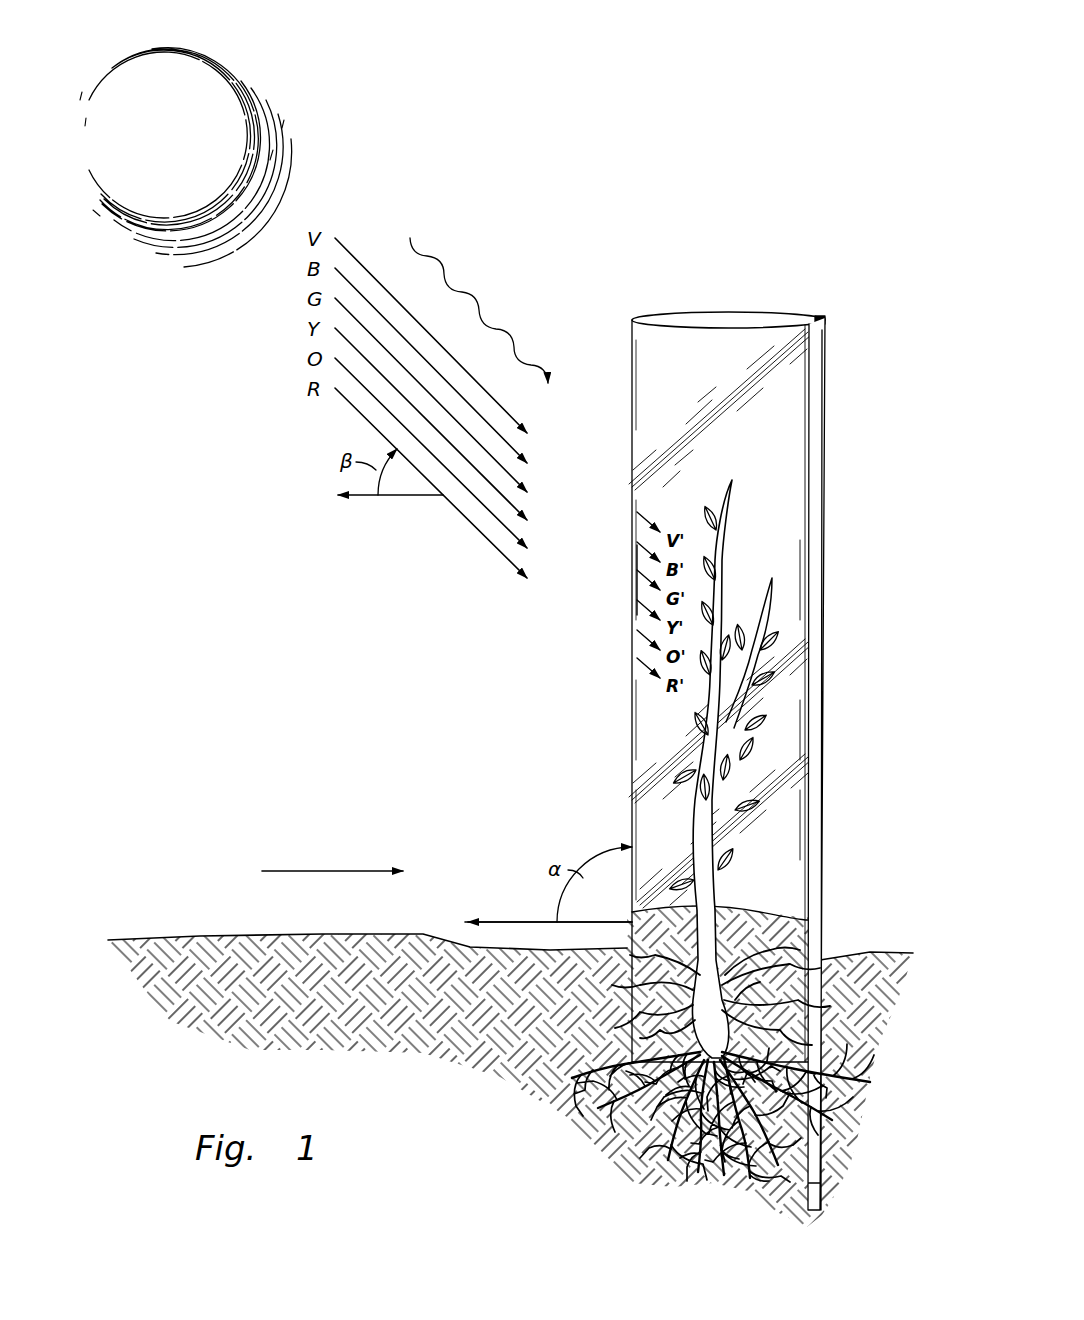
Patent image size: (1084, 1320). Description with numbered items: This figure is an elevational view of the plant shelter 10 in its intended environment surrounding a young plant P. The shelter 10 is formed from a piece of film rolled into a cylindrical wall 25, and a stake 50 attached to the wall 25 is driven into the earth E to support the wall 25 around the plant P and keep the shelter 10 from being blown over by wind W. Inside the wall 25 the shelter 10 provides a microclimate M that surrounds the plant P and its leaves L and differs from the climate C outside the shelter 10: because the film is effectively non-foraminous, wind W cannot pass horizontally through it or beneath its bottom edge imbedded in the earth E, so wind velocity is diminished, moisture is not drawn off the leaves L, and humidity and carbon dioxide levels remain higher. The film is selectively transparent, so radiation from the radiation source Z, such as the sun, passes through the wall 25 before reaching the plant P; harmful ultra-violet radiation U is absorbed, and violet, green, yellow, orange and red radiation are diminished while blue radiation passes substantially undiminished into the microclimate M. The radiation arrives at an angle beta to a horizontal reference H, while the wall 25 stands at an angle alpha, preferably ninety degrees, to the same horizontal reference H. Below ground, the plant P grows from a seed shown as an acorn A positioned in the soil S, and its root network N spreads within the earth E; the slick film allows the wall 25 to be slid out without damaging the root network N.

The plant shelter 10 is at (648, 272).
The cylindrical wall 25 is at (630, 358).
The stake 50 is at (826, 350).
The radiation source Z is at (184, 169).
The ultra-violet radiation U is at (469, 305).
The horizontal reference H is at (380, 497).
The climate C is at (191, 732).
The wind W is at (328, 870).
The earth E is at (268, 1024).
The soil S is at (786, 949).
The microclimate M is at (766, 444).
The plant P is at (698, 822).
The leaves L is at (734, 860).
The acorn A is at (721, 997).
The root network N is at (598, 1138).